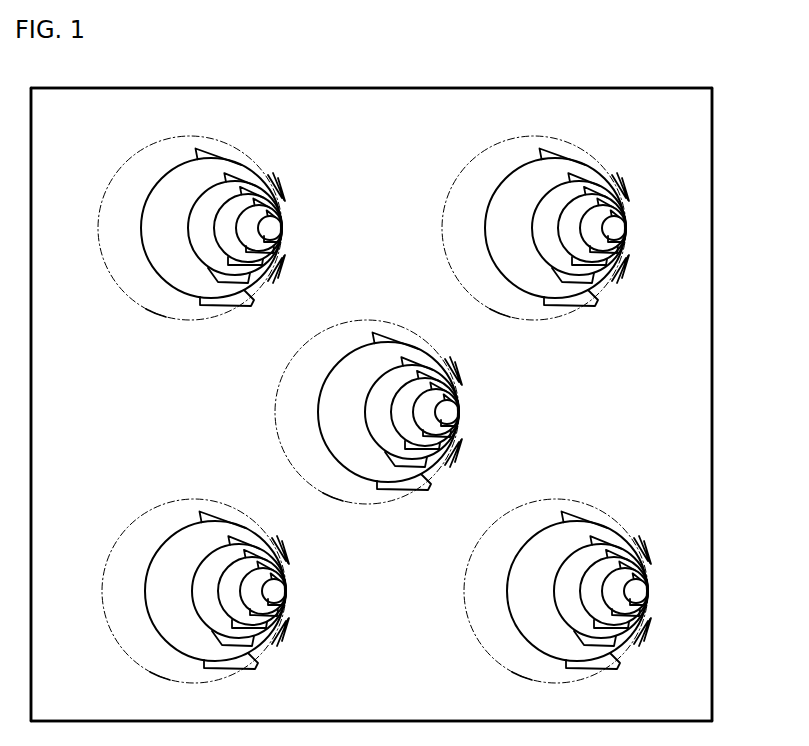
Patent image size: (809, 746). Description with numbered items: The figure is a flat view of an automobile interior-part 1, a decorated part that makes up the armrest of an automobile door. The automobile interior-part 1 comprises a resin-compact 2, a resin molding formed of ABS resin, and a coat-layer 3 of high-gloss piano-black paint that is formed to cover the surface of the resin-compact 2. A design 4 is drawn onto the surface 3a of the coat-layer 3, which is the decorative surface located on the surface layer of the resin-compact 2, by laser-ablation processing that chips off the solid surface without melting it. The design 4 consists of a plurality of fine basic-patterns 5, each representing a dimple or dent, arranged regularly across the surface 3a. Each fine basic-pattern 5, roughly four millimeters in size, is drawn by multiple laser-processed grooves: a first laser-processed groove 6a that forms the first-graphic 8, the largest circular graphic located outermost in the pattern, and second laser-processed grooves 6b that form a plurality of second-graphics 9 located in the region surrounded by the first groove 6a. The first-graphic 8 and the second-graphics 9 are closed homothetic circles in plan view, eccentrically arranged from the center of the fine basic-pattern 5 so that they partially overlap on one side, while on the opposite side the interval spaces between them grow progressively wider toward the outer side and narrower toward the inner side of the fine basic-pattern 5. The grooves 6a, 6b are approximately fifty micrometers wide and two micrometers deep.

The automobile interior-part 1 is at (724, 117).
The resin-compact 2 is at (713, 178).
The coat-layer 3 is at (698, 236).
The surface of the coat-layer 3a is at (684, 371).
The design 4 is at (102, 118).
The fine basic-pattern 5 is at (350, 409).
The first laser-processed groove 6a is at (364, 515).
The second laser-processed groove 6b is at (434, 466).
The first-graphic 8 is at (394, 384).
The second-graphic 9 is at (425, 374).